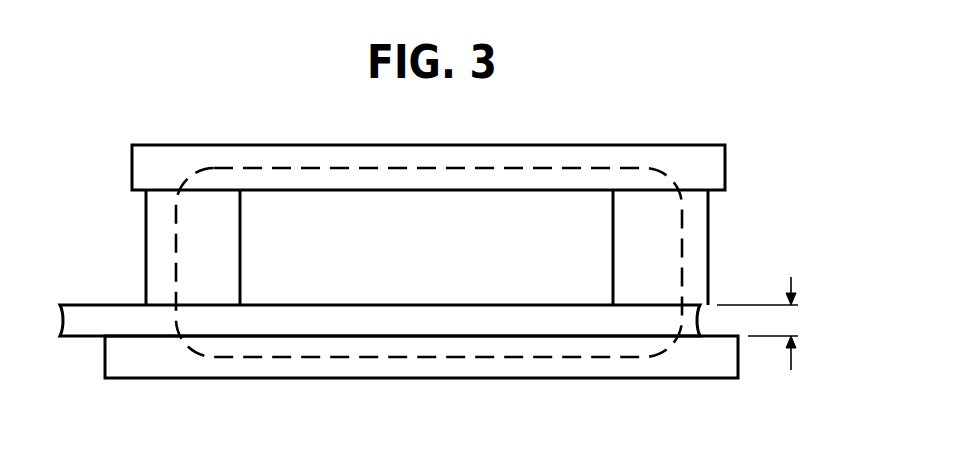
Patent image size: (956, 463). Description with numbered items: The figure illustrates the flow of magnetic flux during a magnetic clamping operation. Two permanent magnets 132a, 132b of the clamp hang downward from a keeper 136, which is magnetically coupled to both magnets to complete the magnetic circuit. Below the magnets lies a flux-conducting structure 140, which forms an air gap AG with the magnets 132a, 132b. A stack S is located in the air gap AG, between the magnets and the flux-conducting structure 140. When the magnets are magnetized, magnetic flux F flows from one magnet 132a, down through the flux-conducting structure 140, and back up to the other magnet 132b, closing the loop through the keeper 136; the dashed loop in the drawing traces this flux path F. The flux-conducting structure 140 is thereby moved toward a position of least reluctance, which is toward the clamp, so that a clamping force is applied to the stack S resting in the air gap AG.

The keeper 136 is at (712, 146).
The magnet 132a is at (146, 249).
The magnet 132b is at (708, 248).
The stack S is at (90, 337).
The flux-conducting structure 140 is at (162, 378).
The magnetic flux F is at (582, 355).
The air gap AG is at (763, 323).